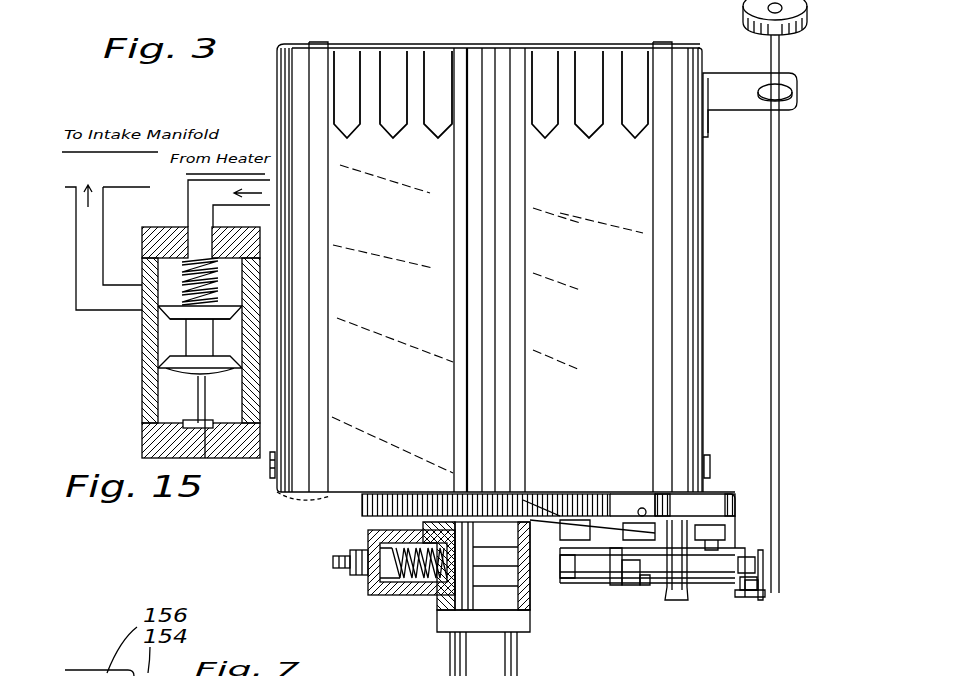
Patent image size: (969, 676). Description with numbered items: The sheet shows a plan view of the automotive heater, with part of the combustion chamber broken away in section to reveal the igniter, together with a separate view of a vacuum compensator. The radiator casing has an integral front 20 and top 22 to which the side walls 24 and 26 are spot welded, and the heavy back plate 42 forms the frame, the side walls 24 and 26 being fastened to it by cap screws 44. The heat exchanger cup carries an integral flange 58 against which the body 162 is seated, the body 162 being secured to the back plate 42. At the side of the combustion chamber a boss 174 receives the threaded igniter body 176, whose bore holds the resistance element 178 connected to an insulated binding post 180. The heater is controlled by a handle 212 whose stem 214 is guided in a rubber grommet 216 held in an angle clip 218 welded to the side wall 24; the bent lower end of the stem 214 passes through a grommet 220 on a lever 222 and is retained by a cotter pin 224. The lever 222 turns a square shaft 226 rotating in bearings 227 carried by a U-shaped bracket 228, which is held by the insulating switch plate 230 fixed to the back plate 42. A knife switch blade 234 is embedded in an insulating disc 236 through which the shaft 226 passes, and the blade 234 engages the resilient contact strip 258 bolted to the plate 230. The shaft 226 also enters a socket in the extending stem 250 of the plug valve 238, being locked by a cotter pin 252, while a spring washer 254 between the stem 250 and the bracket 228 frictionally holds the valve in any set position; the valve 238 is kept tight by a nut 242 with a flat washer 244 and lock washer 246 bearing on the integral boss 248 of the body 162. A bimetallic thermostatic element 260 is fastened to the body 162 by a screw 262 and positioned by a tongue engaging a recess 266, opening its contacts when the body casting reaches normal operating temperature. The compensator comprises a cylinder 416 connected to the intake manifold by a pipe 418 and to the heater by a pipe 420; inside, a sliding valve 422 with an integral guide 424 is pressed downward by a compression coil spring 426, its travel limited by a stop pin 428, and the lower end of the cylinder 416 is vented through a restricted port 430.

In FIG. 3, the front 20 is at (429, 44).
In FIG. 3, the top 22 is at (402, 234).
In FIG. 3, the side wall 24 is at (703, 296).
In FIG. 3, the side wall 26 is at (268, 372).
In FIG. 3, the back plate 42 is at (330, 496).
In FIG. 3, the cap screws 44 is at (270, 456).
In FIG. 3, the flange 58 is at (405, 493).
In FIG. 3, the body 162 is at (450, 630).
In FIG. 3, the boss 174 is at (440, 603).
In FIG. 3, the igniter body 176 is at (395, 595).
In FIG. 3, the resistance element 178 is at (372, 595).
In FIG. 3, the binding post 180 is at (345, 556).
In FIG. 3, the handle 212 is at (795, 30).
In FIG. 3, the stem 214 is at (780, 188).
In FIG. 3, the rubber grommet 216 is at (792, 97).
In FIG. 3, the angle clip 218 is at (750, 100).
In FIG. 3, the grommet 220 is at (765, 588).
In FIG. 3, the lever 222 is at (760, 578).
In FIG. 3, the cotter pin 224 is at (760, 597).
In FIG. 3, the square shaft 226 is at (762, 565).
In FIG. 3, the bearings 227 is at (745, 596).
In FIG. 3, the U-shaped bracket 228 is at (750, 560).
In FIG. 3, the insulating switch plate 230 is at (712, 500).
In FIG. 3, the knife switch blade 234 is at (690, 595).
In FIG. 3, the disc 236 is at (666, 600).
In FIG. 3, the valve 238 is at (592, 578).
In FIG. 3, the nut 242 is at (492, 566).
In FIG. 3, the flat washer 244 is at (495, 557).
In FIG. 3, the lock washer 246 is at (495, 577).
In FIG. 3, the boss 248 is at (495, 537).
In FIG. 3, the extending stem 250 is at (580, 560).
In FIG. 3, the cotter pin 252 is at (607, 547).
In FIG. 3, the spring washer 254 is at (622, 522).
In FIG. 3, the resilient contact strip 258 is at (700, 585).
In FIG. 3, the bimetallic thermostatic element 260 is at (576, 500).
In FIG. 3, the screw 262 is at (523, 500).
In FIG. 3, the recess 266 is at (705, 584).
In FIG. 15, the cylinder 416 is at (160, 352).
In FIG. 15, the pipe 418 is at (100, 216).
In FIG. 15, the pipe 420 is at (222, 208).
In FIG. 15, the sliding valve 422 is at (180, 316).
In FIG. 15, the guide 424 is at (185, 374).
In FIG. 15, the compression coil spring 426 is at (185, 262).
In FIG. 15, the stop pin 428 is at (195, 398).
In FIG. 15, the restricted port 430 is at (205, 430).